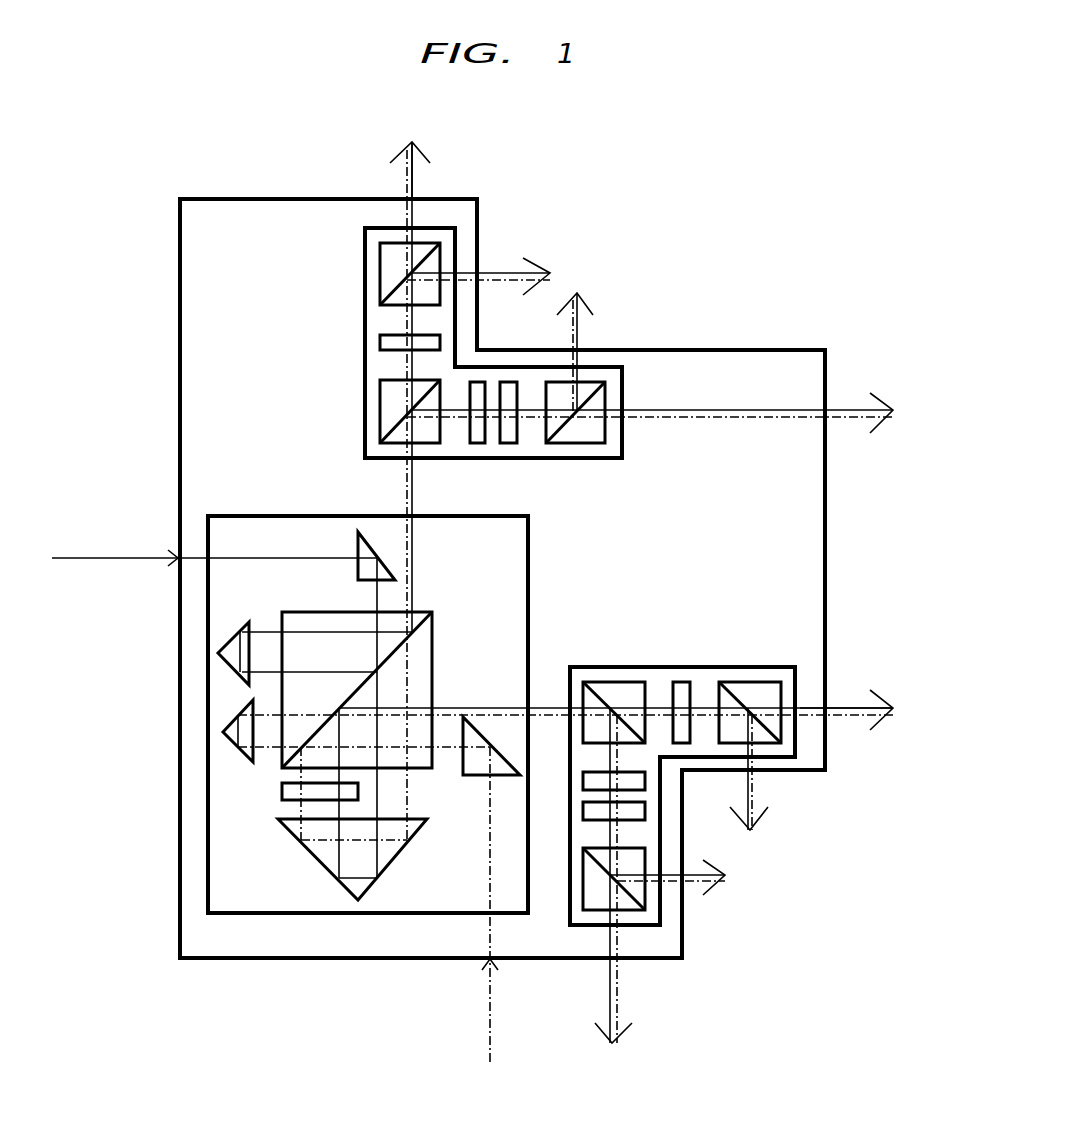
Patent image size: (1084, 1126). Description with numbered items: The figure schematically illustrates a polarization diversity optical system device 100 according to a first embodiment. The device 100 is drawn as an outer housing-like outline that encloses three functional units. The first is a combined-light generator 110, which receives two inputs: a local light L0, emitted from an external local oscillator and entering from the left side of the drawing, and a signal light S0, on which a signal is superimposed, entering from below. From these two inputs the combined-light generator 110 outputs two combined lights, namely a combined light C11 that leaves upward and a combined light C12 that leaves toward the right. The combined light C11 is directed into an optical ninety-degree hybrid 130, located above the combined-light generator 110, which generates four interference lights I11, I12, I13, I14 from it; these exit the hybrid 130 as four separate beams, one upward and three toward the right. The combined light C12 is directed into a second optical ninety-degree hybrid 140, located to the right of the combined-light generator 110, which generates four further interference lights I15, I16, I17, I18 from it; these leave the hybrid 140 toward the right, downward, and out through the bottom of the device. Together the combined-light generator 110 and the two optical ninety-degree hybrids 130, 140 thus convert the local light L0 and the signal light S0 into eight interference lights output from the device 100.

The polarization diversity optical system device 100 is at (287, 199).
The combined-light generator 110 is at (290, 517).
The optical 90-degree hybrid 130 is at (365, 330).
The optical 90-degree hybrid 140 is at (682, 667).
The local light L0 is at (116, 558).
The signal light S0 is at (490, 1018).
The combined light C11 is at (428, 487).
The combined light C12 is at (547, 698).
The interference light I11 is at (433, 173).
The interference light I12 is at (498, 262).
The interference light I13 is at (588, 336).
The interference light I14 is at (847, 398).
The interference light I15 is at (845, 698).
The interference light I16 is at (763, 787).
The interference light I17 is at (628, 1002).
The interference light I18 is at (693, 892).